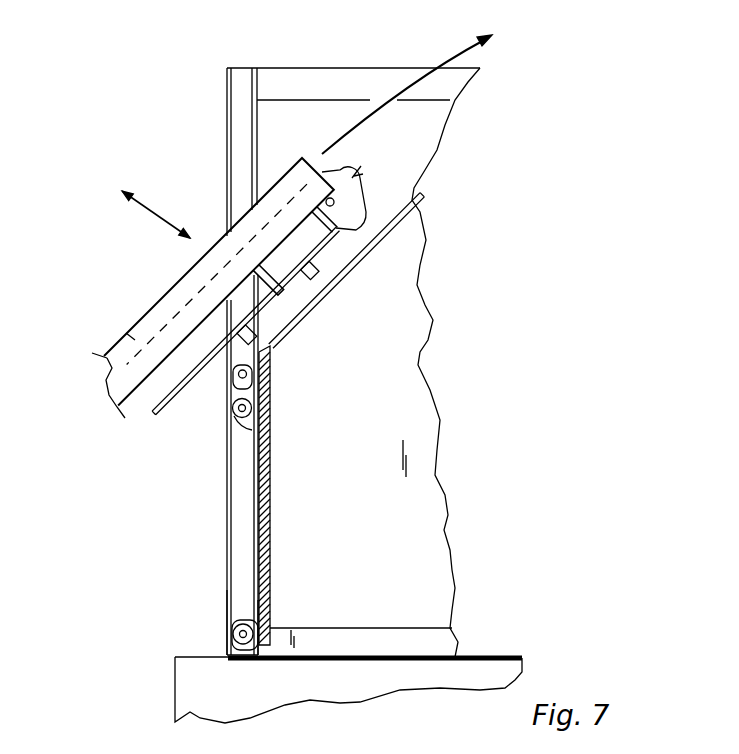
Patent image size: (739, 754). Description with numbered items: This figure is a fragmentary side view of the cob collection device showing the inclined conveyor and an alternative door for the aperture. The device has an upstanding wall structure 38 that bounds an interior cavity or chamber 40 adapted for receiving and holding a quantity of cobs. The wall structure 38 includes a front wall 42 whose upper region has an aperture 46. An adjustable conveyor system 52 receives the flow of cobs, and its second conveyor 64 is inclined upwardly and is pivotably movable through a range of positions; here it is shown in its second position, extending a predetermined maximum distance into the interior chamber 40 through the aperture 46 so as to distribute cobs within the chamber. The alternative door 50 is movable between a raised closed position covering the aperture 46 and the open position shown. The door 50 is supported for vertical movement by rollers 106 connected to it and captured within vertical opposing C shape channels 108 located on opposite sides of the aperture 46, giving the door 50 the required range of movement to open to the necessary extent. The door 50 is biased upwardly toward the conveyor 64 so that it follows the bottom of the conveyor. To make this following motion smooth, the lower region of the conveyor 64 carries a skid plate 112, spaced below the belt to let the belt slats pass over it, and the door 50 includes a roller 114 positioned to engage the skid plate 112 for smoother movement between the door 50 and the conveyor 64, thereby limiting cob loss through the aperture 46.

The upstanding wall structure 38 is at (456, 587).
The interior cavity or chamber 40 is at (303, 117).
The front wall 42 is at (228, 602).
The aperture 46 is at (242, 103).
The alternative door 50 is at (232, 545).
The adjustable conveyor system 52 is at (185, 290).
The second conveyor 64 is at (126, 333).
The rollers 106 is at (263, 440).
The C shape channels 108 is at (242, 495).
The skid plate 112 is at (370, 243).
The roller 114 is at (268, 372).